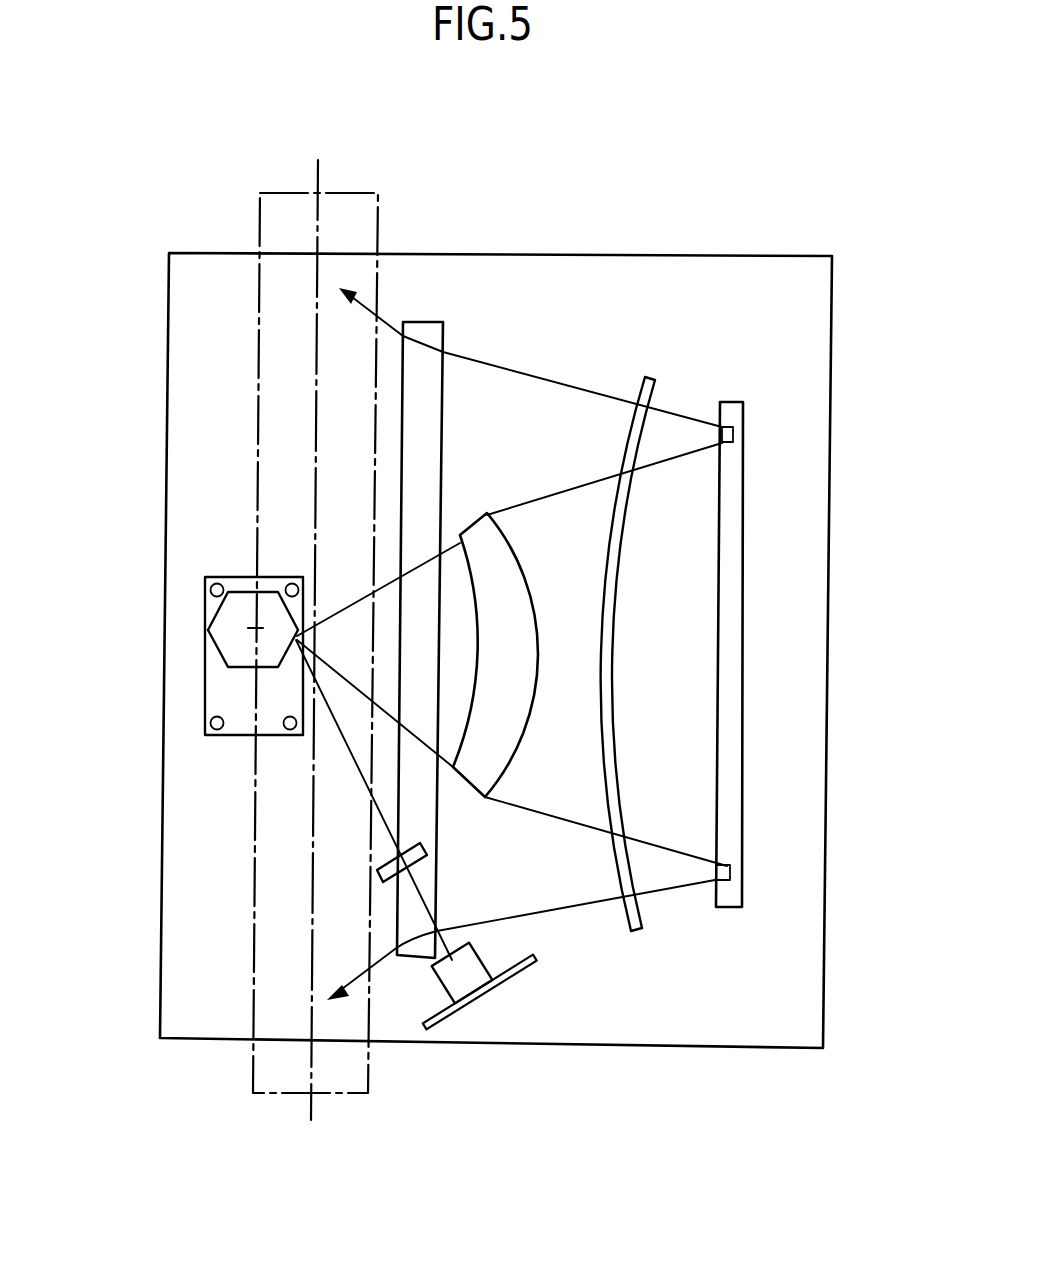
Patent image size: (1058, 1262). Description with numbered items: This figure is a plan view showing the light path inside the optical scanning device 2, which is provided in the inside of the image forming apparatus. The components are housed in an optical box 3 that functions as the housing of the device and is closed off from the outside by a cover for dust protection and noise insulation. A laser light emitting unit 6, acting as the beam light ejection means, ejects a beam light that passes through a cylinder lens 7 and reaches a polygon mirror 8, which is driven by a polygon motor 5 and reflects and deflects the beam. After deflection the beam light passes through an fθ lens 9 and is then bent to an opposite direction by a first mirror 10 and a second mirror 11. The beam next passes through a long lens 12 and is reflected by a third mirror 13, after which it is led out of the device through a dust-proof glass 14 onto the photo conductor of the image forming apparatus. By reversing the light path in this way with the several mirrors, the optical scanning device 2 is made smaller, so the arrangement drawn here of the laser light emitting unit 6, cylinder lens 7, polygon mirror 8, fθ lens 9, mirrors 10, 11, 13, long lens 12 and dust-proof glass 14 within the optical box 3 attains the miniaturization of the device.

The optical scanning device 2 is at (450, 650).
The optical box 3 is at (182, 425).
The polygon motor 5 is at (210, 682).
The laser light emitting unit 6 is at (484, 1014).
The cylinder lens 7 is at (383, 877).
The polygon mirror 8 is at (230, 613).
The fθ lens 9 is at (486, 514).
The first mirror 10 is at (807, 536).
The second mirror 11 is at (730, 403).
The long lens 12 is at (647, 378).
The third mirror 13 is at (423, 326).
The dust-proof glass 14 is at (252, 1090).